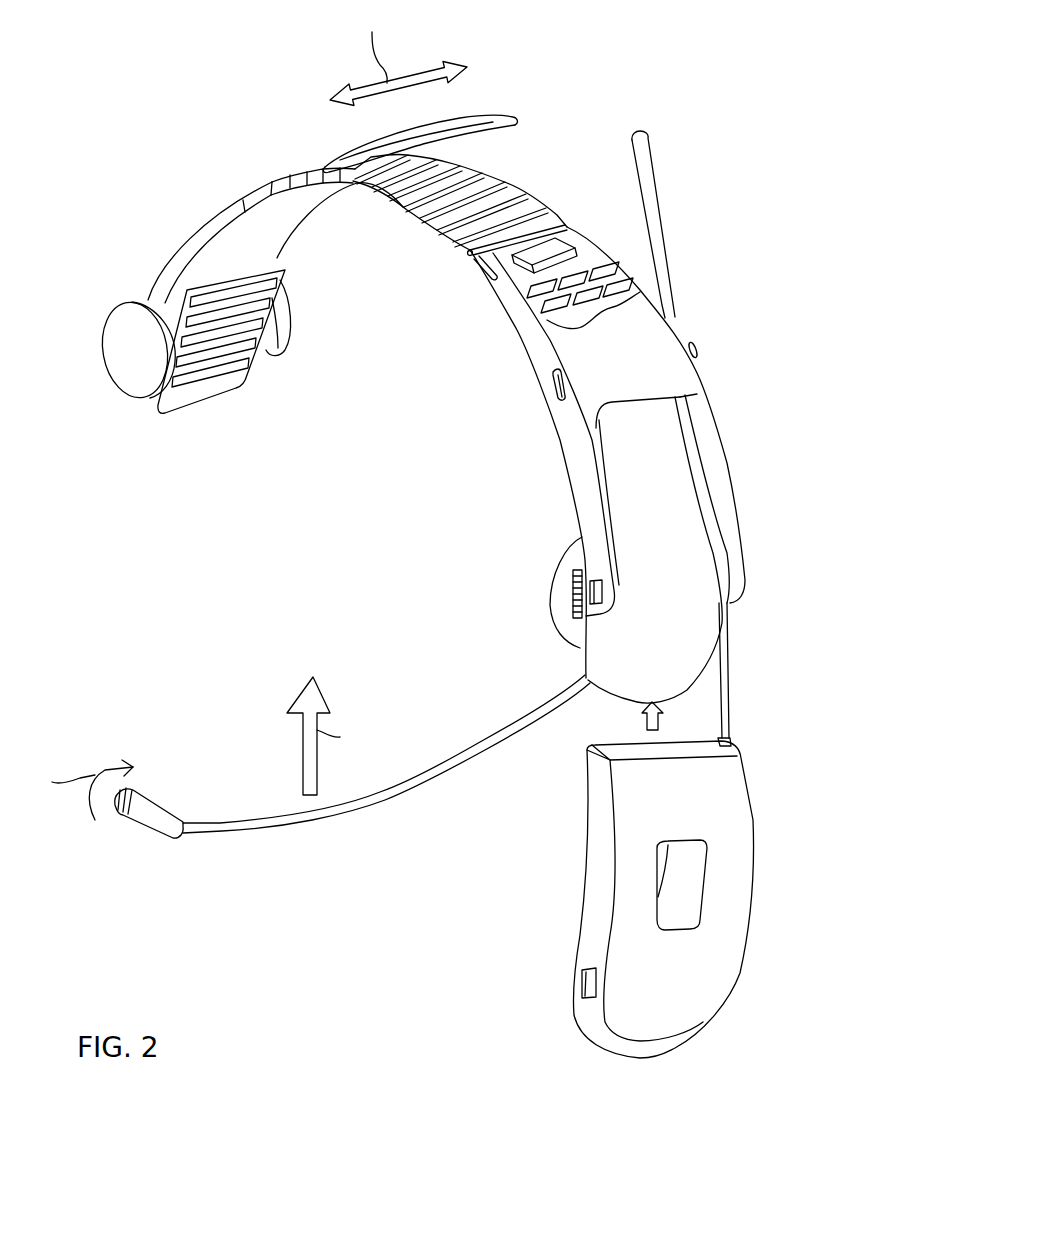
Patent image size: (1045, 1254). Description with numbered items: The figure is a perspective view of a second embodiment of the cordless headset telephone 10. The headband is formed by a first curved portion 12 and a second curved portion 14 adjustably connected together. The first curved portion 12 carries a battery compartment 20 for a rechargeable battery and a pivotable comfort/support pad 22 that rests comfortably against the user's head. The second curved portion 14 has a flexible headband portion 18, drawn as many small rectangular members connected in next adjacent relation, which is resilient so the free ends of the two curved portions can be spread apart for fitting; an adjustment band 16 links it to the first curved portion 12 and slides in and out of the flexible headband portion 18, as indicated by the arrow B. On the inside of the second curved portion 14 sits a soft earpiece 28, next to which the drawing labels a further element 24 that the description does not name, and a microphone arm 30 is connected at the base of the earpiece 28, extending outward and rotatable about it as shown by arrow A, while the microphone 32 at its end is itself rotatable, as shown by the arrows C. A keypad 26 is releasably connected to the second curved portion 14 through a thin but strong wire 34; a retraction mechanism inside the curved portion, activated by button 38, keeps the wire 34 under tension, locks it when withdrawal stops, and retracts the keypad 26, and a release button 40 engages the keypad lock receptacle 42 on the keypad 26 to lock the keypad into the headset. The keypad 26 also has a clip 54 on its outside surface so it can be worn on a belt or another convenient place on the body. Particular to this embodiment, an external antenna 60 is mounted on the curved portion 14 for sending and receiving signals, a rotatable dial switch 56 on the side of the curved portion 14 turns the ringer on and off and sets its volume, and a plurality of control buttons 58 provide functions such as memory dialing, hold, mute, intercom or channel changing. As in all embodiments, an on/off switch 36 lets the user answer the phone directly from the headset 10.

The cordless headset 10 is at (655, 54).
The first curved portion 12 is at (208, 253).
The second curved portion 14 is at (643, 357).
The adjustment band 16 is at (493, 118).
The flexible headband portion 18 is at (403, 207).
The battery compartment 20 is at (123, 380).
The comfort/support pad 22 is at (252, 377).
The ear cushion 24 is at (665, 550).
The keypad 26 is at (722, 983).
The earpiece 28 is at (558, 578).
The microphone arm 30 is at (228, 825).
The microphone 32 is at (153, 823).
The wire 34 is at (730, 680).
The on/off switch 36 is at (557, 238).
The button 38 is at (552, 393).
The release button 40 is at (577, 620).
The keypad lock receptacle 42 is at (575, 987).
The clip 54 is at (690, 887).
The rotatable dial switch 56 is at (470, 258).
The control buttons 58 is at (558, 333).
The external antenna 60 is at (658, 192).